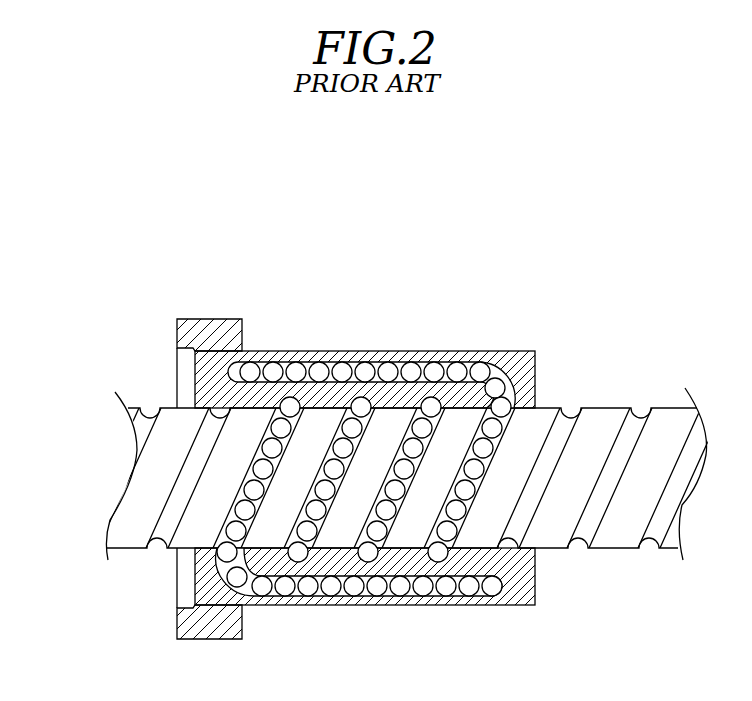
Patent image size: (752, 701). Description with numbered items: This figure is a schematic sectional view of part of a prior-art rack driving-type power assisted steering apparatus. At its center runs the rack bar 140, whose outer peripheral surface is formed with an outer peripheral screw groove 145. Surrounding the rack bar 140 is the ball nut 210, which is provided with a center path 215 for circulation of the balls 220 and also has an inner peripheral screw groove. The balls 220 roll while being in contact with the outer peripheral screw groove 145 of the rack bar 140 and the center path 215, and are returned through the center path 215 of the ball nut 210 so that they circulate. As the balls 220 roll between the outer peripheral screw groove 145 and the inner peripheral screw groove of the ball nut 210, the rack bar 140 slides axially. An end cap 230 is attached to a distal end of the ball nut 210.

The rack bar 140 is at (127, 513).
The outer peripheral screw groove 145 is at (165, 532).
The ball nut 210 is at (522, 595).
The center path 215 is at (237, 373).
The balls 220 is at (413, 368).
The end cap 230 is at (212, 327).